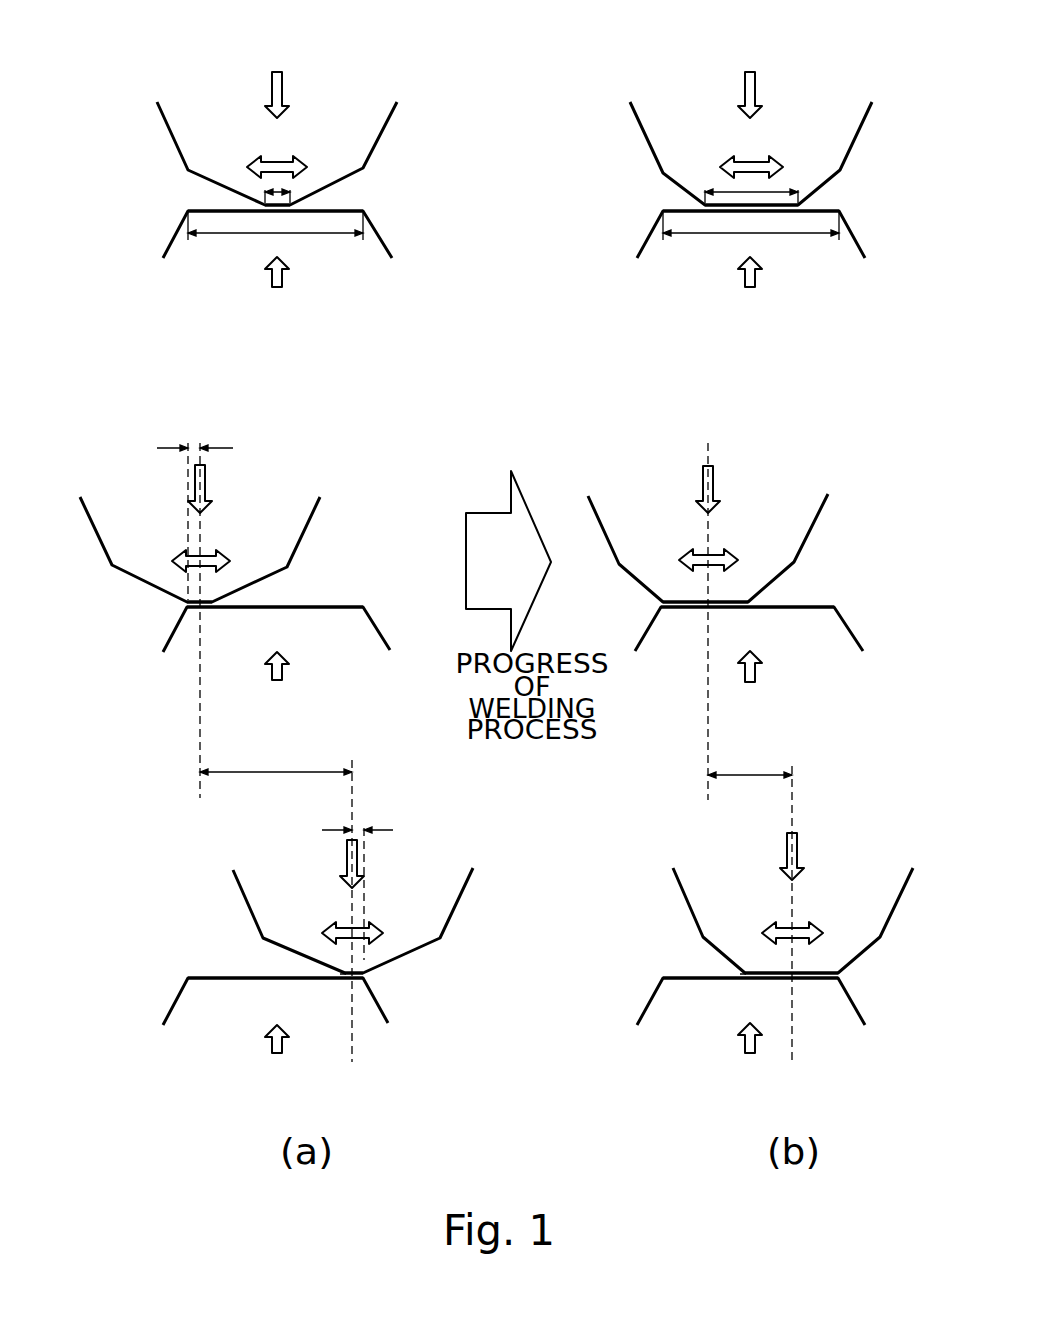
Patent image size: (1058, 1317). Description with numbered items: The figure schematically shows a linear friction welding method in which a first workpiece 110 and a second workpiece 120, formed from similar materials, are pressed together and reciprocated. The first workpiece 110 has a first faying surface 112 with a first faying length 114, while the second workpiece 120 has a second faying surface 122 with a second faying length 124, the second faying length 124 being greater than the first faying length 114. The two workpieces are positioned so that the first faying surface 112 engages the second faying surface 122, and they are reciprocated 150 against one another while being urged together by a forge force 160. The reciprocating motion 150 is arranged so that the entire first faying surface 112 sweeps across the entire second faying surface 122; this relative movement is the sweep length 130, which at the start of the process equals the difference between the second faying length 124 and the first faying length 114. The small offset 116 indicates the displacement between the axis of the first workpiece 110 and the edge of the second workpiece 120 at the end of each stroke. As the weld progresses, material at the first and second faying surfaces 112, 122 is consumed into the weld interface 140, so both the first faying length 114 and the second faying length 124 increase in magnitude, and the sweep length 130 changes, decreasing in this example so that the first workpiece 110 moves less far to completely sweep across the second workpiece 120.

The first workpiece 110 is at (387, 127).
The first faying surface 112 is at (267, 213).
The first faying length 114 is at (282, 192).
The offset distance 116 is at (233, 448).
The second workpiece 120 is at (380, 237).
The second faying surface 122 is at (350, 210).
The second faying length 124 is at (328, 235).
The sweep length 130 is at (287, 770).
The weld interface 140 is at (346, 975).
The reciprocating motion 150 is at (273, 158).
The forge force 160 is at (282, 80).